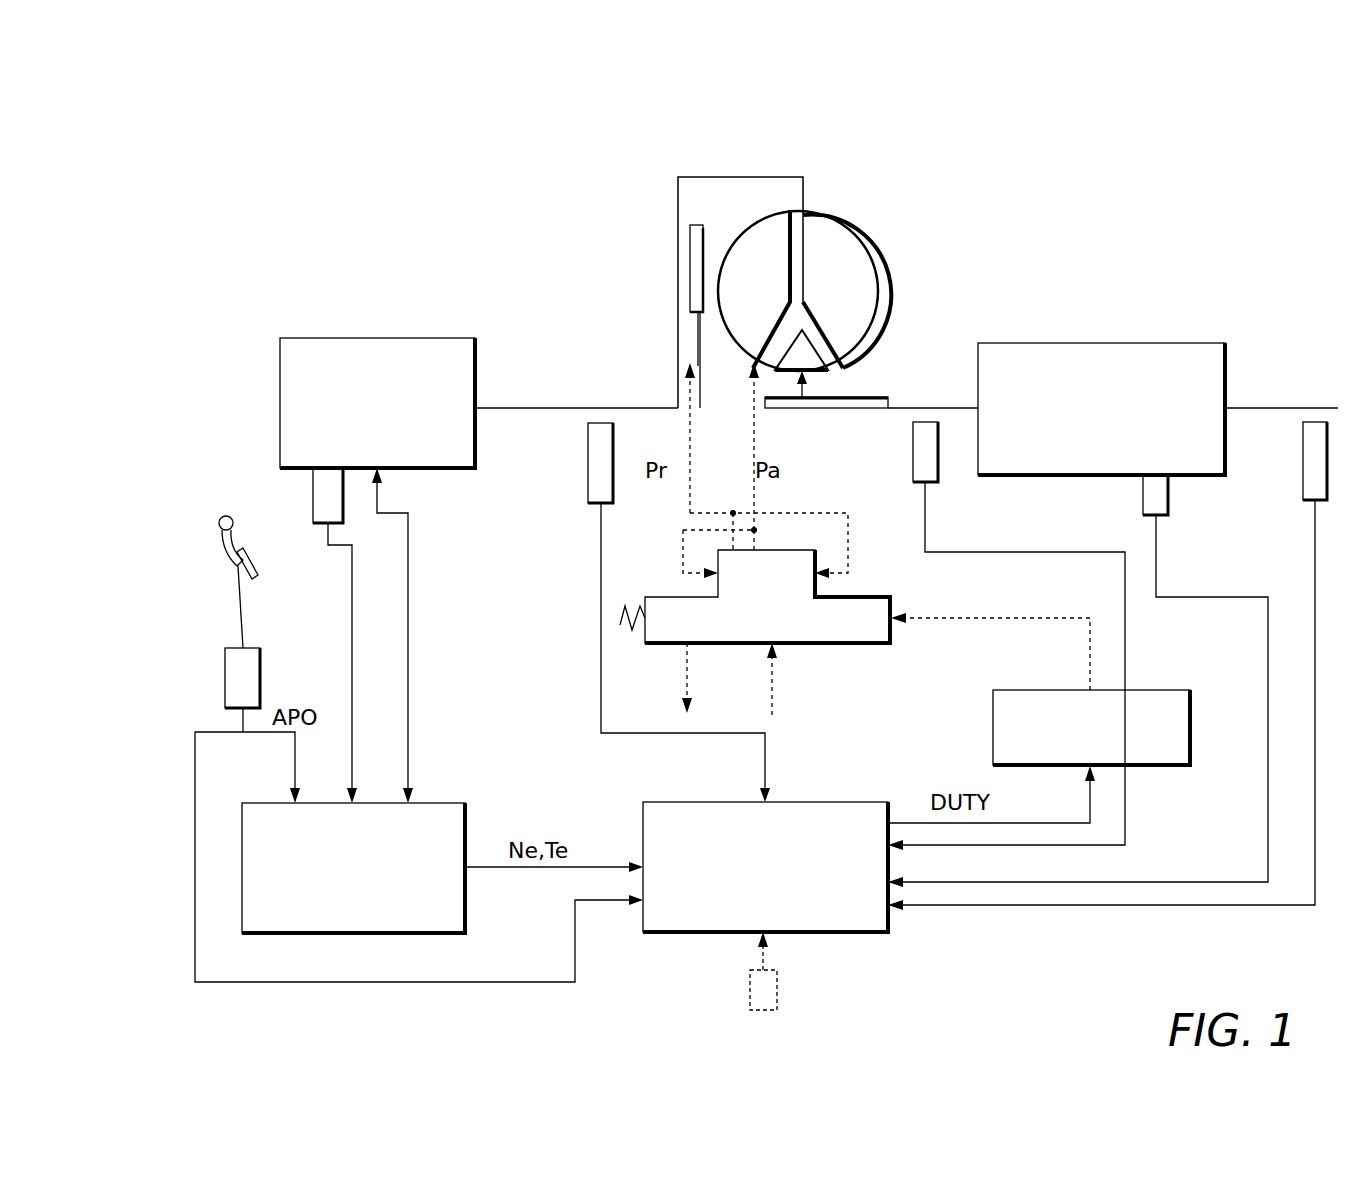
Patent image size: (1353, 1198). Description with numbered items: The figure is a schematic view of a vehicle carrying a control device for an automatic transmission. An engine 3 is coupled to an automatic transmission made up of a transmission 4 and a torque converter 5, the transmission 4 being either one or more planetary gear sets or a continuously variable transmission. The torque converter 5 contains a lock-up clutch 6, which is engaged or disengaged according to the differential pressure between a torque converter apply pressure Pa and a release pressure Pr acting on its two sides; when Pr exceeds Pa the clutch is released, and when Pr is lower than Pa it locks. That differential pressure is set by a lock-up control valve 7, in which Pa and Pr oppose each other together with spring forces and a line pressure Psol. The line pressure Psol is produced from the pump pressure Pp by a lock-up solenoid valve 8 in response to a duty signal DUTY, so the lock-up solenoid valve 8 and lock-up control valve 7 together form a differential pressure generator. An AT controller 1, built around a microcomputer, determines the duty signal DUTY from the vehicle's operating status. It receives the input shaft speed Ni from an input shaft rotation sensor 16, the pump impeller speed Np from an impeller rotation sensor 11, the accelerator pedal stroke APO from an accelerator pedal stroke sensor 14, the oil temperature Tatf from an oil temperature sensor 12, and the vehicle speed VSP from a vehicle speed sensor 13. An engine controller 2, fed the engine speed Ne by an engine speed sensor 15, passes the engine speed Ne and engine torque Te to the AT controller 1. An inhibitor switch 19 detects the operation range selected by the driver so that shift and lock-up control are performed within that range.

The AT controller 1 is at (672, 810).
The engine controller 2 is at (277, 810).
The engine 3 is at (318, 348).
The transmission 4 is at (1035, 355).
The torque converter 5 is at (866, 200).
The lock-up clutch 6 is at (697, 198).
The lock-up control valve 7 is at (870, 565).
The lock-up solenoid valve 8 is at (1016, 698).
The impeller rotation sensor 11 is at (588, 478).
The oil temperature sensor 12 is at (1143, 497).
The vehicle speed sensor 13 is at (1327, 465).
The accelerator pedal stroke sensor 14 is at (225, 683).
The engine speed sensor 15 is at (313, 485).
The input shaft rotation sensor 16 is at (913, 445).
The inhibitor switch 19 is at (778, 985).